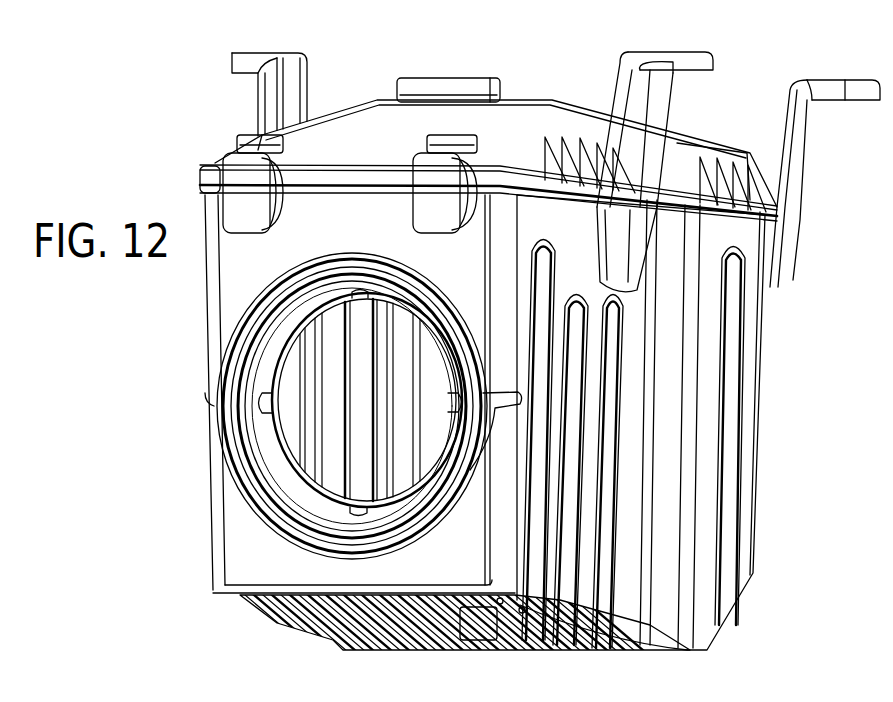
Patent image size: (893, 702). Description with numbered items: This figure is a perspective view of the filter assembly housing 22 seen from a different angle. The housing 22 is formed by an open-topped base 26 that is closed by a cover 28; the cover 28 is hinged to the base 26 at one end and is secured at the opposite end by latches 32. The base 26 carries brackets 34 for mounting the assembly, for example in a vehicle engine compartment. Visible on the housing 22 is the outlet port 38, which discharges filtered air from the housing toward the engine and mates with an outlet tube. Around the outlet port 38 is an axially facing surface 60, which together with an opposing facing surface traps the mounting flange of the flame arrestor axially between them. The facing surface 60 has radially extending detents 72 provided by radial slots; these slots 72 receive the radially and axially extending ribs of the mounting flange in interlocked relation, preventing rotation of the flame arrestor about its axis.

The housing 22 is at (760, 450).
The open-topped base 26 is at (745, 517).
The cover 28 is at (340, 105).
The latches 32 is at (250, 205).
The brackets 34 is at (303, 63).
The outlet port 38 is at (267, 373).
The axially facing surface 60 is at (270, 353).
The detents 72 is at (350, 515).